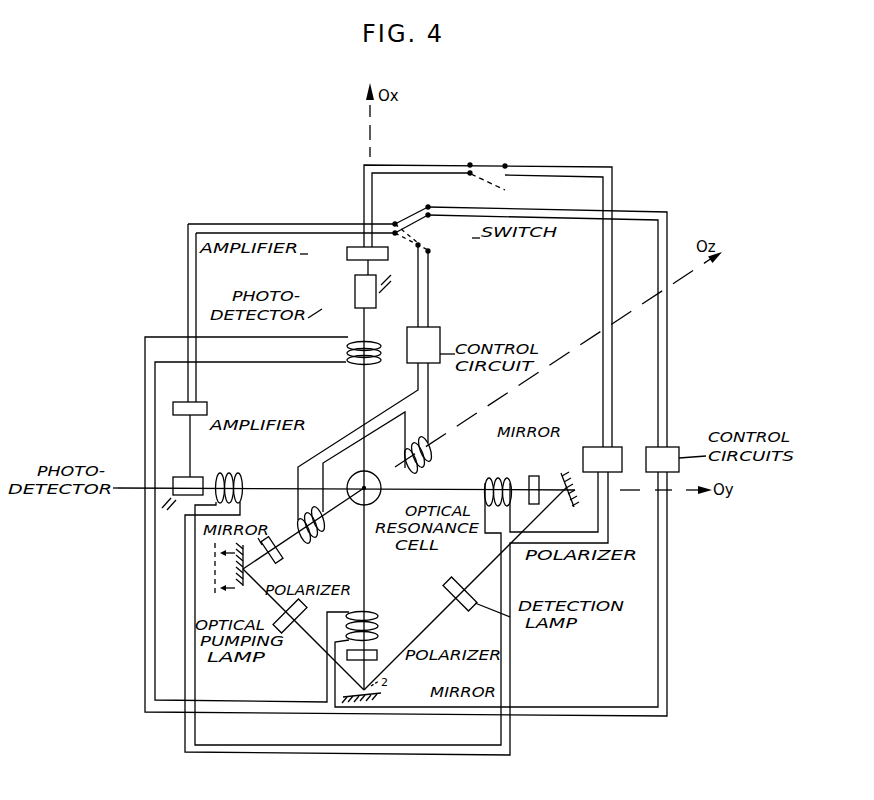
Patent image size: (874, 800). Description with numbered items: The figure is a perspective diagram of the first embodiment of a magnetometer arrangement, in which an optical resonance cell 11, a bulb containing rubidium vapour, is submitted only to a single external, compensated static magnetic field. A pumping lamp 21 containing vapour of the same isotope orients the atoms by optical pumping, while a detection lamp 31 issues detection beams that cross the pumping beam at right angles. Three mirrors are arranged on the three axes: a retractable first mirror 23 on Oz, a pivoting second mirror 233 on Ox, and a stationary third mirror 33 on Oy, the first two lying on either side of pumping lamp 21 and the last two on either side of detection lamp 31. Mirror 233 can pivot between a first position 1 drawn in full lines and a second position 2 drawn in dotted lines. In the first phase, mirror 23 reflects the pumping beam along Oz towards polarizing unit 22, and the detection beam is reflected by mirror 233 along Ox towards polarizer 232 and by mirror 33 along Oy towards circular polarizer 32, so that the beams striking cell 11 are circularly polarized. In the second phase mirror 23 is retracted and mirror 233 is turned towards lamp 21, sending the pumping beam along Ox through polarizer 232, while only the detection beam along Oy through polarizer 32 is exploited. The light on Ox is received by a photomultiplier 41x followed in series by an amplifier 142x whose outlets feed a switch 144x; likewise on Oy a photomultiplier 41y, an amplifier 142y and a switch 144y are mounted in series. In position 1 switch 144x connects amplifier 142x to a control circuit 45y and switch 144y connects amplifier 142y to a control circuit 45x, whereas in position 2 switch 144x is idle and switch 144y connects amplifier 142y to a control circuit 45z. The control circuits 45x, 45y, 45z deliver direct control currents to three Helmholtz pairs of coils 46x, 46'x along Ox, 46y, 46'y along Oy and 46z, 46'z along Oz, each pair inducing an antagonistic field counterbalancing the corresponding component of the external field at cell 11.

The first position 1 is at (505, 165).
The second position 2 is at (524, 190).
The optical resonance cell 11 is at (376, 502).
The lamp 21 is at (292, 628).
The polarizing unit 22 is at (278, 555).
The first mirror 23 is at (243, 587).
The detection lamp 31 is at (455, 585).
The circular polarizer 32 is at (548, 547).
The third mirror 33 is at (555, 440).
The photomultiplier 41x is at (355, 295).
The photomultiplier 41y is at (178, 478).
The control circuit 45x is at (668, 449).
The control circuit 45y is at (586, 450).
The control circuit 45z is at (441, 332).
The coil 46x is at (351, 360).
The coil 46'x is at (496, 589).
The coil 46y is at (498, 478).
The coil 46'y is at (396, 605).
The coil 46z is at (430, 455).
The coil 46'z is at (327, 525).
The amplifier 142x is at (347, 250).
The amplifier 142y is at (207, 409).
The switch 144x is at (478, 161).
The switch 144y is at (420, 238).
The polarizer 232 is at (377, 658).
The second mirror 233 is at (381, 702).